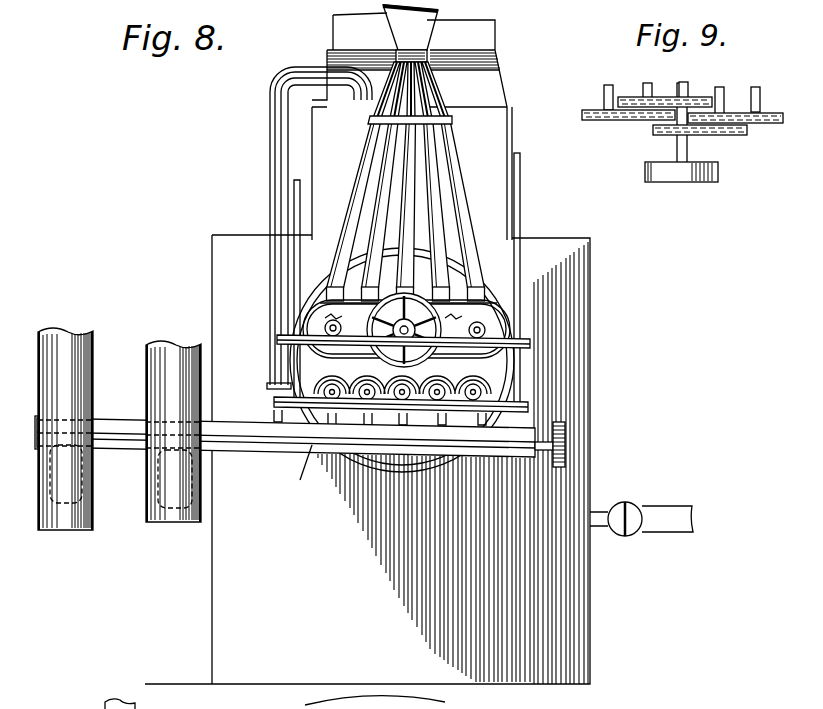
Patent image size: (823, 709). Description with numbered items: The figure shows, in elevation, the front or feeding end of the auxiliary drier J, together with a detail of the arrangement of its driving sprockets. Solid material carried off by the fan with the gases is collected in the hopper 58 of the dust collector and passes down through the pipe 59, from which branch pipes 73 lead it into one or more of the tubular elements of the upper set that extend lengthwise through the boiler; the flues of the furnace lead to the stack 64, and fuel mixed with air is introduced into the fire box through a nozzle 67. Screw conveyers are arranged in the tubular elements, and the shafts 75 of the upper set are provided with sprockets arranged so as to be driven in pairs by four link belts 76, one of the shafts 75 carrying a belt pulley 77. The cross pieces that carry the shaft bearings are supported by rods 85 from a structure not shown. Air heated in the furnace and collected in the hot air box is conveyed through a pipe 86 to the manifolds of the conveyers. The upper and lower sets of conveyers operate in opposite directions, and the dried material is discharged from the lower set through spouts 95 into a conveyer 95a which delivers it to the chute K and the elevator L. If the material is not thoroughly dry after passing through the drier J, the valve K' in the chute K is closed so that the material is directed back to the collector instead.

In FIG. 8, the hopper 58 is at (430, 17).
In FIG. 8, the pipe 59 is at (427, 50).
In FIG. 8, the stack 64 is at (500, 70).
In FIG. 8, the nozzle 67 is at (668, 512).
In FIG. 8, the branch pipes 73 is at (433, 203).
In FIG. 8, the shafts 75 is at (463, 330).
In FIG. 9, the shafts 75 is at (754, 88).
In FIG. 8, the link belts 76 is at (463, 388).
In FIG. 9, the link belts 76 is at (764, 123).
In FIG. 8, the belt pulley 77 is at (395, 365).
In FIG. 9, the belt pulley 77 is at (720, 172).
In FIG. 8, the rods 85 is at (521, 230).
In FIG. 8, the pipe 86 is at (270, 110).
In FIG. 8, the spouts 95 is at (353, 428).
In FIG. 8, the conveyer 95a is at (290, 470).
In FIG. 8, the drier J is at (578, 607).
In FIG. 8, the chute K is at (131, 431).
In FIG. 8, the valve K' is at (142, 476).
In FIG. 8, the elevator L is at (90, 387).